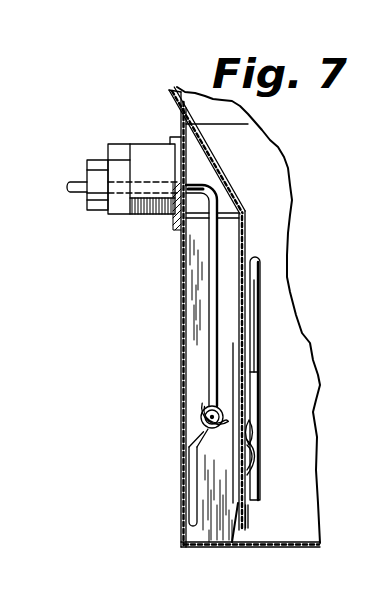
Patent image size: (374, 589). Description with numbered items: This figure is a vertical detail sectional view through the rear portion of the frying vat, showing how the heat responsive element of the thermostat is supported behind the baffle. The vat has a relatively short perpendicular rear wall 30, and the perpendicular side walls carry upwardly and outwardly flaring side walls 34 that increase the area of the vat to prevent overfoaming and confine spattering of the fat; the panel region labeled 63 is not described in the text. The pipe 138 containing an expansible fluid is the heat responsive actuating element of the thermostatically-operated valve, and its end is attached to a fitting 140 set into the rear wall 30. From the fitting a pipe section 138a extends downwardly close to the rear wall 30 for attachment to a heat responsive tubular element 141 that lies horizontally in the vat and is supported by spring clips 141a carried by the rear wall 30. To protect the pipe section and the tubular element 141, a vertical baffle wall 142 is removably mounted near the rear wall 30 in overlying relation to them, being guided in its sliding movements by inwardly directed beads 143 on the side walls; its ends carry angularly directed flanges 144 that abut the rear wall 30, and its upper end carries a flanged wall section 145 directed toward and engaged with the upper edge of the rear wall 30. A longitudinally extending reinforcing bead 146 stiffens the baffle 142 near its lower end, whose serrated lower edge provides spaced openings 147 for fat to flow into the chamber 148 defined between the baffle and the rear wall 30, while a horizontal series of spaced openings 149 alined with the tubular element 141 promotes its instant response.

The rear wall 30 is at (182, 332).
The upwardly and outwardly flaring side walls 34 is at (176, 91).
The panel 63 is at (372, 273).
The pipe 138 is at (75, 182).
The pipe section 138a is at (219, 273).
The fitting 140 is at (157, 150).
The heat responsive tubular element 141 is at (200, 413).
The spring clips 141a is at (189, 437).
The baffle wall 142 is at (261, 392).
The inwardly directed beads 143 is at (262, 343).
The angularly directed flanges 144 is at (210, 493).
The flanged wall section 145 is at (227, 179).
The reinforcing bead 146 is at (263, 465).
The spaced openings 147 is at (253, 523).
The chamber 148 is at (198, 315).
The spaced openings 149 is at (254, 420).